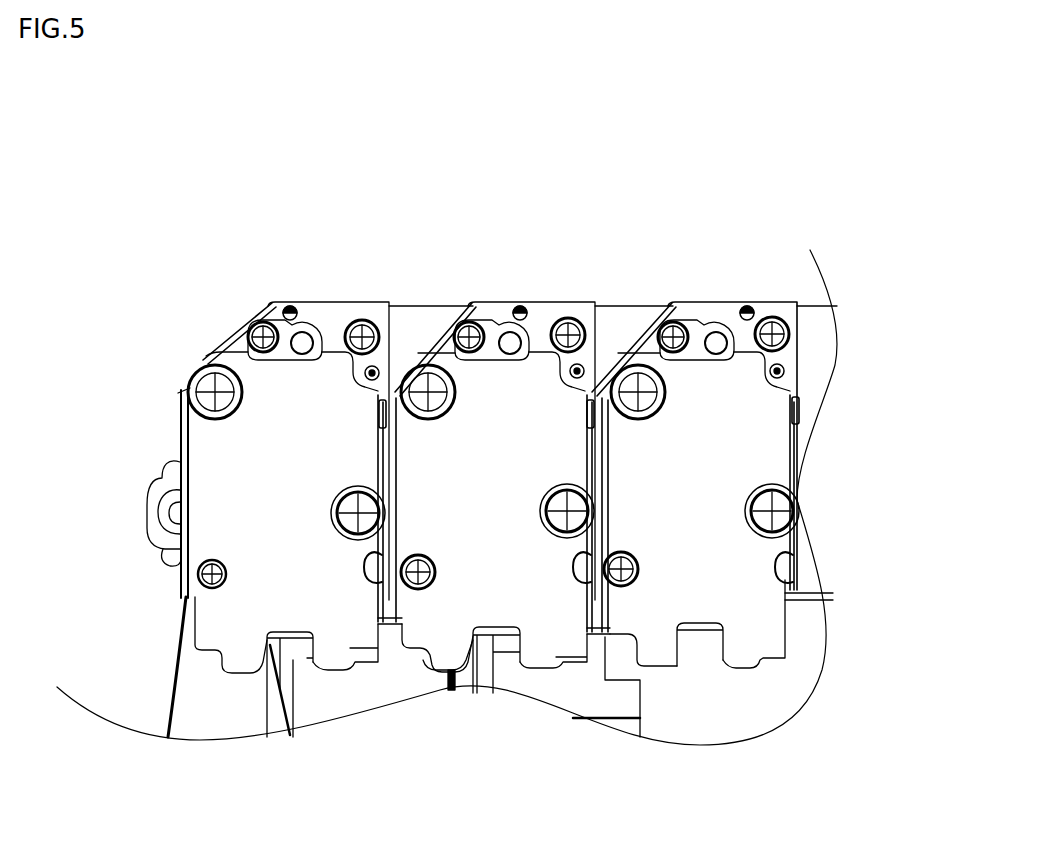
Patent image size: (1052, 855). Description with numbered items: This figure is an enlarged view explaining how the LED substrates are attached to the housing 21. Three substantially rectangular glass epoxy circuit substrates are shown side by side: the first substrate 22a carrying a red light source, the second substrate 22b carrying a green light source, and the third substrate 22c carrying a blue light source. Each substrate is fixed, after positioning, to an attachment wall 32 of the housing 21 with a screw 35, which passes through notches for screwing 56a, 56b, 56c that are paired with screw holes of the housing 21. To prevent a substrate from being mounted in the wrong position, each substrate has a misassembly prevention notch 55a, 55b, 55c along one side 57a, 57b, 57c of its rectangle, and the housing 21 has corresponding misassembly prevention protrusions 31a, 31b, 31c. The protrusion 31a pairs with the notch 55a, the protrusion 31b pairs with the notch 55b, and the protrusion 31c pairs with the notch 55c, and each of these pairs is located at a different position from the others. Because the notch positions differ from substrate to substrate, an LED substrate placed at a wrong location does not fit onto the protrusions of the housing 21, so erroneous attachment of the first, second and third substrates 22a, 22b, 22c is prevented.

The housing 21 is at (183, 573).
The first substrate 22a is at (203, 355).
The second substrate 22b is at (440, 330).
The third substrate 22c is at (803, 433).
The misassembly prevention protrusion 31a is at (370, 585).
The misassembly prevention protrusion 31b is at (579, 586).
The misassembly prevention protrusion 31c is at (783, 588).
The attachment wall 32 is at (398, 317).
The screw 35 is at (602, 307).
The misassembly prevention notch 55a is at (372, 584).
The misassembly prevention notch 55b is at (578, 583).
The misassembly prevention notch 55c is at (783, 584).
The notch for screwing 56a is at (208, 357).
The notch for screwing 56b is at (425, 368).
The notch for screwing 56c is at (632, 368).
The one side 57a is at (373, 417).
The one side 57b is at (587, 427).
The one side 57c is at (790, 400).